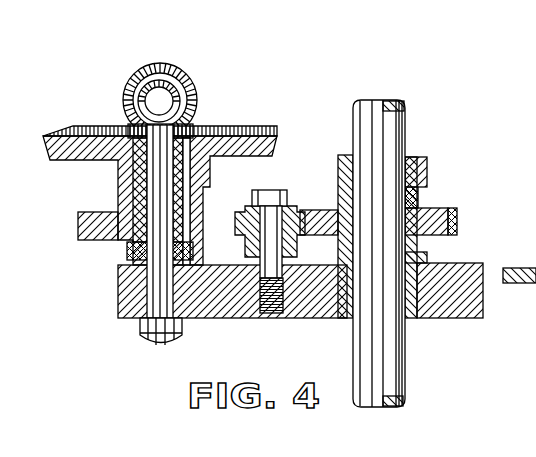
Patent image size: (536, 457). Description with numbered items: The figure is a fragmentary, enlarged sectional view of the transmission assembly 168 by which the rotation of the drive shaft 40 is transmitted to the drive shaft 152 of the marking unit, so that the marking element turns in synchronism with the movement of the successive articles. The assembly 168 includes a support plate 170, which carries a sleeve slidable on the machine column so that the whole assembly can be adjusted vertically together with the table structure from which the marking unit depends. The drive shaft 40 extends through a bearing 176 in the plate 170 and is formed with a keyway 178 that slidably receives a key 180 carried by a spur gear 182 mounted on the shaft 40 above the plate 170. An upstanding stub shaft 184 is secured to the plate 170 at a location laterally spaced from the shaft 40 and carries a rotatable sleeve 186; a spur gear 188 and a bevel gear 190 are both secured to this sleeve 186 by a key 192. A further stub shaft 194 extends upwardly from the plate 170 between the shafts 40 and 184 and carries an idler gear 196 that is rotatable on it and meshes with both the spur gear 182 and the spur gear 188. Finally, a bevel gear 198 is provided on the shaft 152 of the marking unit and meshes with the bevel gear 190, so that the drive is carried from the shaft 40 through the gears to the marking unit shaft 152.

The drive shaft 40 is at (384, 143).
The drive shaft 152 is at (189, 77).
The transmission assembly 168 is at (440, 98).
The support plate 170 is at (466, 318).
The bearing 176 is at (410, 318).
The keyway 178 is at (405, 365).
The key 180 is at (425, 200).
The spur gear 182 is at (458, 215).
The stub shaft 184 is at (127, 249).
The rotatable sleeve 186 is at (126, 197).
The spur gear 188 is at (77, 224).
The bevel gear 190 is at (247, 128).
The key 192 is at (203, 197).
The stub shaft 194 is at (283, 272).
The idler gear 196 is at (300, 210).
The bevel gear 198 is at (197, 100).